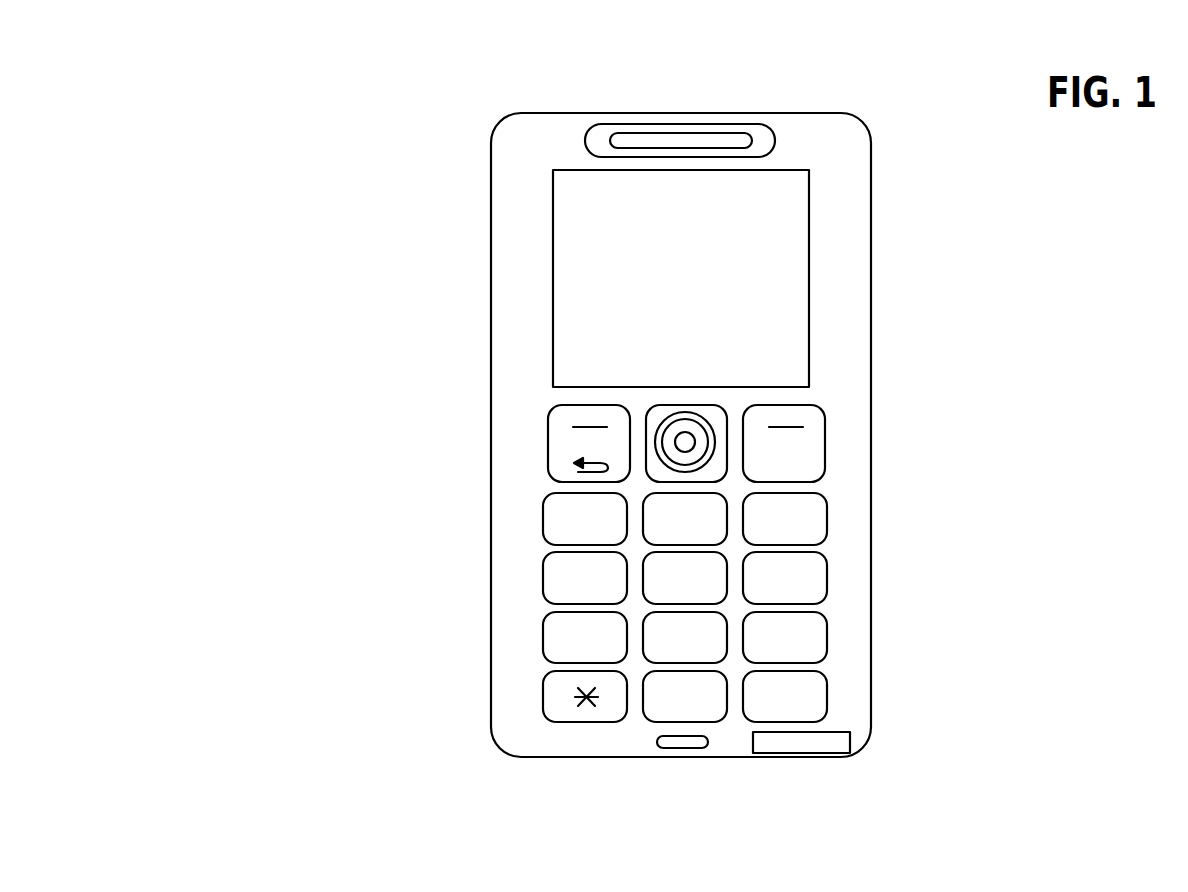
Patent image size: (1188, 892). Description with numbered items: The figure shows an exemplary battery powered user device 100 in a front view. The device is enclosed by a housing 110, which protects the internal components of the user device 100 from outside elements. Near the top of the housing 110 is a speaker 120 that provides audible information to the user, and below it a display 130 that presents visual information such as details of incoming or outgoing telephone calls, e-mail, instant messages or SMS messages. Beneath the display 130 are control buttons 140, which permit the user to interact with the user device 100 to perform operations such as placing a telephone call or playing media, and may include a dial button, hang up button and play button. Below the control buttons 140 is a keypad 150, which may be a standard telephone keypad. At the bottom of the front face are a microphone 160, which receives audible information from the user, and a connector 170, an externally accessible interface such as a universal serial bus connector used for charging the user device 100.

The user device 100 is at (262, 79).
The housing 110 is at (492, 160).
The speaker 120 is at (775, 139).
The display 130 is at (809, 303).
The control buttons 140 is at (839, 411).
The keypad 150 is at (845, 688).
The microphone 160 is at (685, 748).
The connector 170 is at (830, 744).